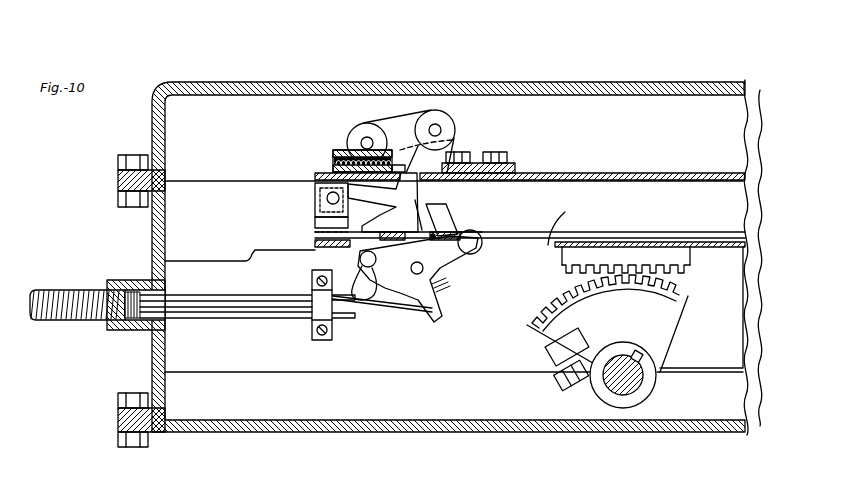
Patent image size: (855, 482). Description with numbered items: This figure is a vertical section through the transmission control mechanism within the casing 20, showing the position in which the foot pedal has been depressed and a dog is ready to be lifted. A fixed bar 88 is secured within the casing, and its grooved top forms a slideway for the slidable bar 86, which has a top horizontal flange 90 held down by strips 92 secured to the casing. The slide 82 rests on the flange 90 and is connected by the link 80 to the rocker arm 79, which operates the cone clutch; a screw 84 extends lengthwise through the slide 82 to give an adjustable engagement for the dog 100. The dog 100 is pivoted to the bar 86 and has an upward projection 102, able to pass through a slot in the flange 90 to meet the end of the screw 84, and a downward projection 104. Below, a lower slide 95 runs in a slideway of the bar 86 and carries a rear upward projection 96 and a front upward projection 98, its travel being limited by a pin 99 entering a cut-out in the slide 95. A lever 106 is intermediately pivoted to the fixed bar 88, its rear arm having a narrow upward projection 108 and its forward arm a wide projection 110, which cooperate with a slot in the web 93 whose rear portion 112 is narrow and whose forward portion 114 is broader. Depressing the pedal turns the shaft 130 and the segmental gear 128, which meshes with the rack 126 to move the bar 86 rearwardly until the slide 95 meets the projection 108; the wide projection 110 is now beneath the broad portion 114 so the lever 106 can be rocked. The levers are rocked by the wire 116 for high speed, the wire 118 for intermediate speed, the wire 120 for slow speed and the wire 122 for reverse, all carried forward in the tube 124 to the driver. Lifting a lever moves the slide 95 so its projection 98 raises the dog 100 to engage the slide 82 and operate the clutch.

The casing 20 is at (380, 432).
The rocker arm 79 is at (428, 162).
The link 80 is at (395, 128).
The slide 82 is at (337, 152).
The screw 84 is at (333, 158).
The slidable bar 86 is at (648, 195).
The fixed bar 88 is at (358, 363).
The top horizontal flange 90 is at (597, 172).
The strips 92 is at (515, 168).
The webs 93 is at (675, 240).
The slides 95 is at (480, 247).
The upward projection 96 is at (446, 218).
The upward projection 98 is at (392, 240).
The pins 99 is at (458, 250).
The dogs 100 is at (318, 228).
The upward projections 102 is at (405, 187).
The downward projections 104 is at (417, 200).
The levers 106 is at (445, 272).
The narrow upward projection 108 is at (472, 225).
The wide projection 110 is at (370, 302).
The narrow rear portion of slot 112 is at (569, 222).
The broad forward portion of slot 114 is at (350, 247).
The wire 116 is at (410, 315).
The wire 118 is at (268, 300).
The wire 120 is at (255, 315).
The wire 122 is at (215, 318).
The tube 124 is at (85, 318).
The rack 126 is at (560, 258).
The segmental gear 128 is at (665, 290).
The shaft 130 is at (640, 385).